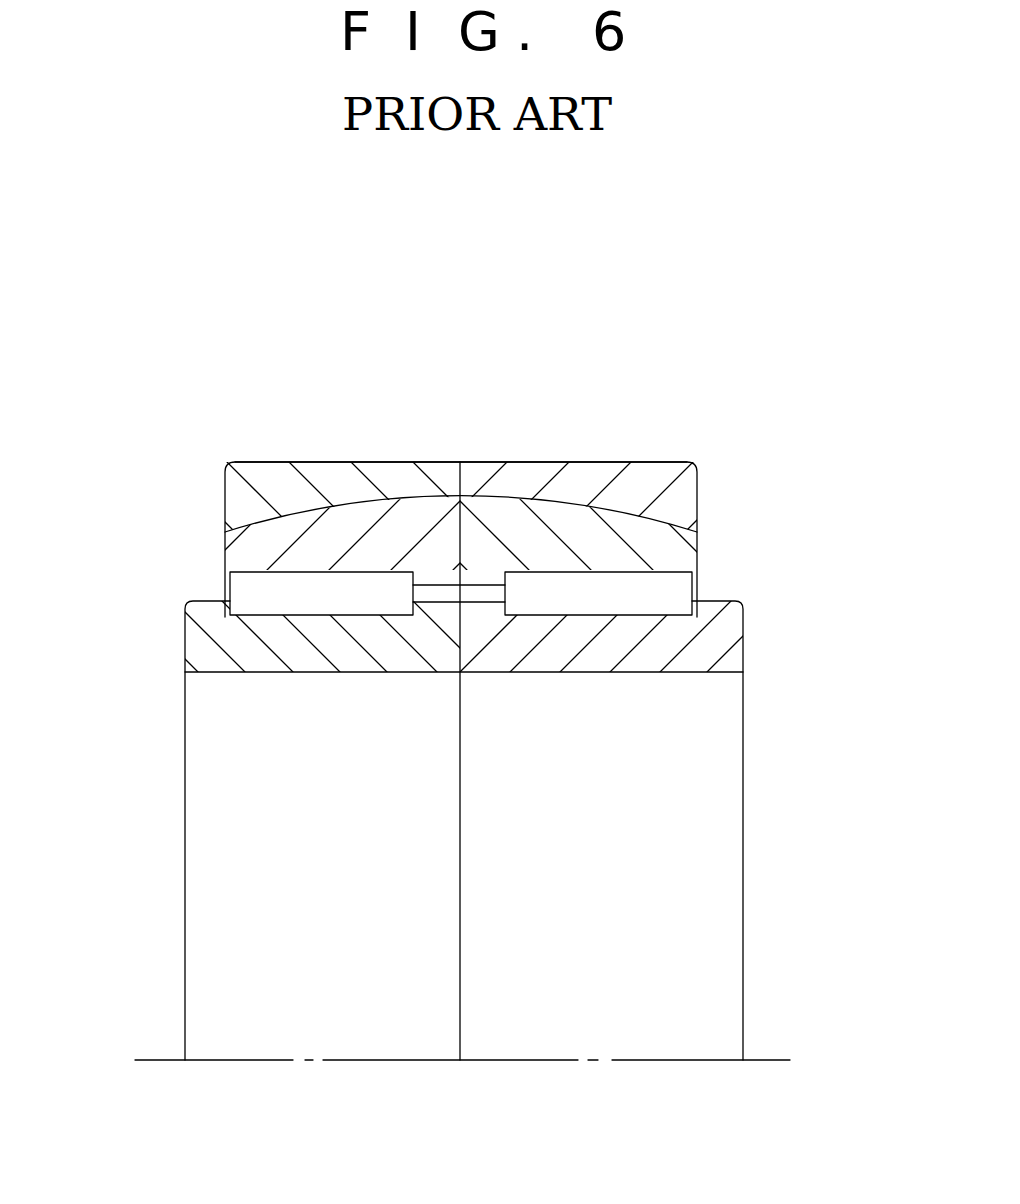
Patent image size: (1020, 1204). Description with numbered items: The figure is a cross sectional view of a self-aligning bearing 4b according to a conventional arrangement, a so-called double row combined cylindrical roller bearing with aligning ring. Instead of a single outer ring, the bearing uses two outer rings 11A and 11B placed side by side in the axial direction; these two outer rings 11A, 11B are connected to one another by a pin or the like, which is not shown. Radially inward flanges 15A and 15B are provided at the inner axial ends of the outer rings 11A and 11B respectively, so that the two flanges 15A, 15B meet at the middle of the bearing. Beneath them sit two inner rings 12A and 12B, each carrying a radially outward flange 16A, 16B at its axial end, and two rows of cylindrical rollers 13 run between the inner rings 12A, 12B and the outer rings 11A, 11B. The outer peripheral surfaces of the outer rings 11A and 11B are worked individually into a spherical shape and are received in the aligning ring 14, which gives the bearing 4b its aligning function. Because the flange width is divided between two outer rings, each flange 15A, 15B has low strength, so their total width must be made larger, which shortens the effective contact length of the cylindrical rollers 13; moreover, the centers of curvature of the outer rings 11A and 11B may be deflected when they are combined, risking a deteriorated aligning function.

The self-aligning bearing 4b is at (710, 444).
The outer ring 11A is at (360, 523).
The outer ring 11B is at (583, 535).
The inner ring 12A is at (267, 658).
The inner ring 12B is at (681, 658).
The cylindrical rollers 13 is at (317, 600).
The aligning ring 14 is at (408, 473).
The radially inward flange 15A is at (380, 570).
The radially inward flange 15B is at (525, 570).
The radially outward flange 16A is at (207, 603).
The radially outward flange 16B is at (718, 598).